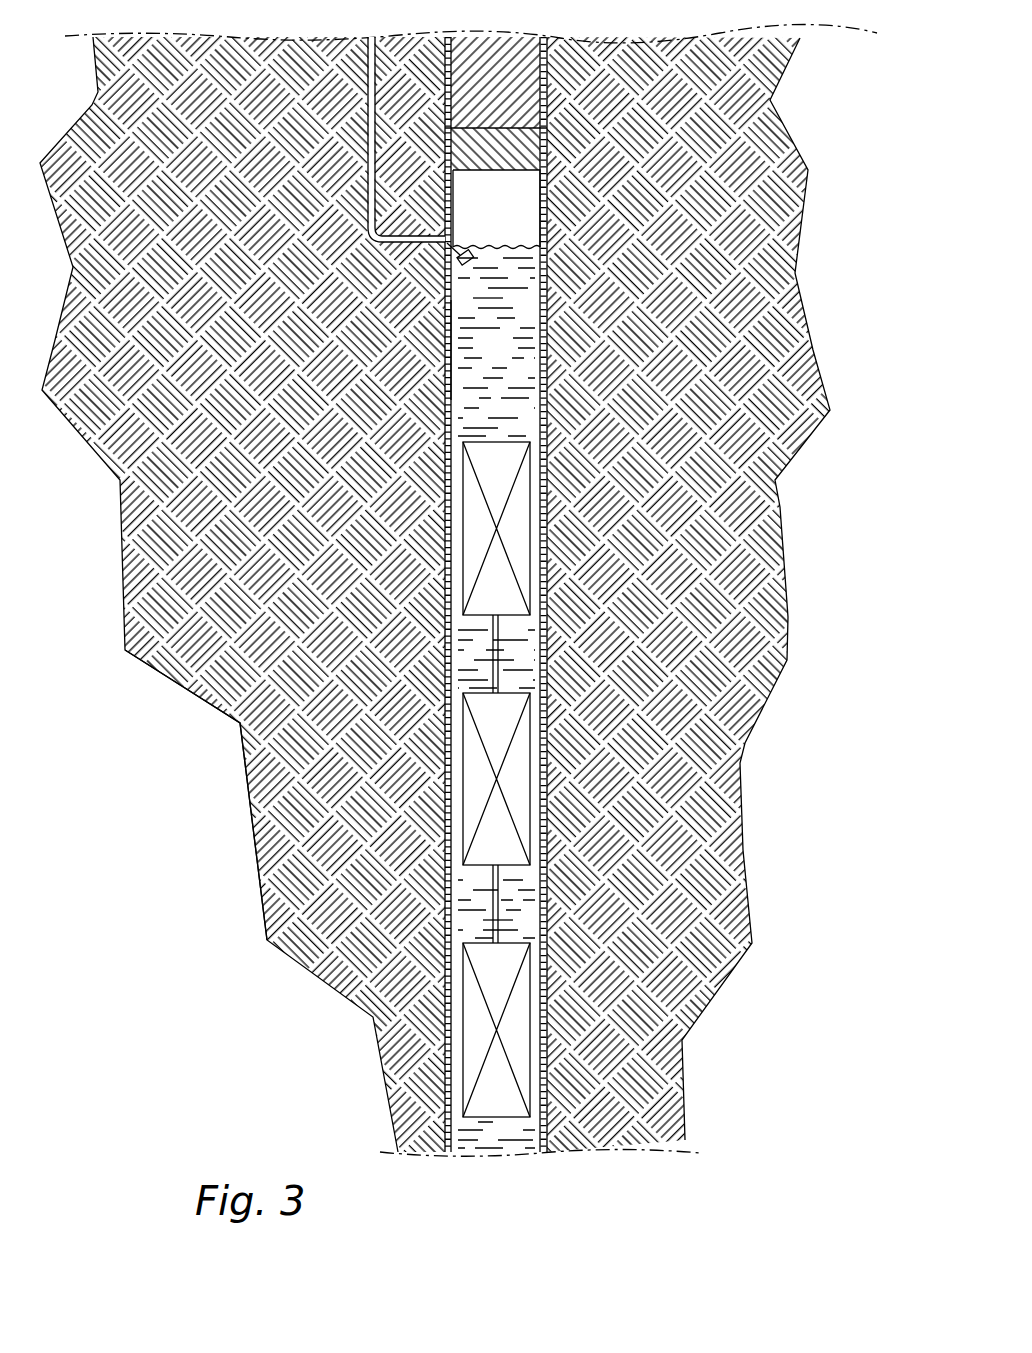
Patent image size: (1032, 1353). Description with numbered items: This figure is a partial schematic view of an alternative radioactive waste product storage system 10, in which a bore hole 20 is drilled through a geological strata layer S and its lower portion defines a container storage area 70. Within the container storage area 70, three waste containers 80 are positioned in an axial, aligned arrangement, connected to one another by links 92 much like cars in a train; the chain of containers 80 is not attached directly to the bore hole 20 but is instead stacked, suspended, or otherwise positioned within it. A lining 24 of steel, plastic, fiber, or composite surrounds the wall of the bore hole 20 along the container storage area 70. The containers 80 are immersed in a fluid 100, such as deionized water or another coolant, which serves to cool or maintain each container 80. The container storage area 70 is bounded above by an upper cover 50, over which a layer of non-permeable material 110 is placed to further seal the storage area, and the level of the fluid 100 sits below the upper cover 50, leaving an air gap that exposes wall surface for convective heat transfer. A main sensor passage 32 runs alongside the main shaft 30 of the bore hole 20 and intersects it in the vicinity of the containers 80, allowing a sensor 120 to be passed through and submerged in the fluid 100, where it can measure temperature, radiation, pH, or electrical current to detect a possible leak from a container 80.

The radioactive waste product storage system 10 is at (815, 88).
The bore hole 20 is at (838, 195).
The container storage area 70 is at (838, 300).
The non-permeable material 110 is at (545, 92).
The upper cover 50 is at (512, 147).
The main shaft 30 is at (520, 217).
The main sensor passage 32 is at (370, 244).
The sensor 120 is at (450, 263).
The lining 24 is at (455, 358).
The fluid 100 is at (525, 373).
The container 80 is at (546, 513).
The link 92 is at (546, 641).
The geological strata S is at (313, 820).